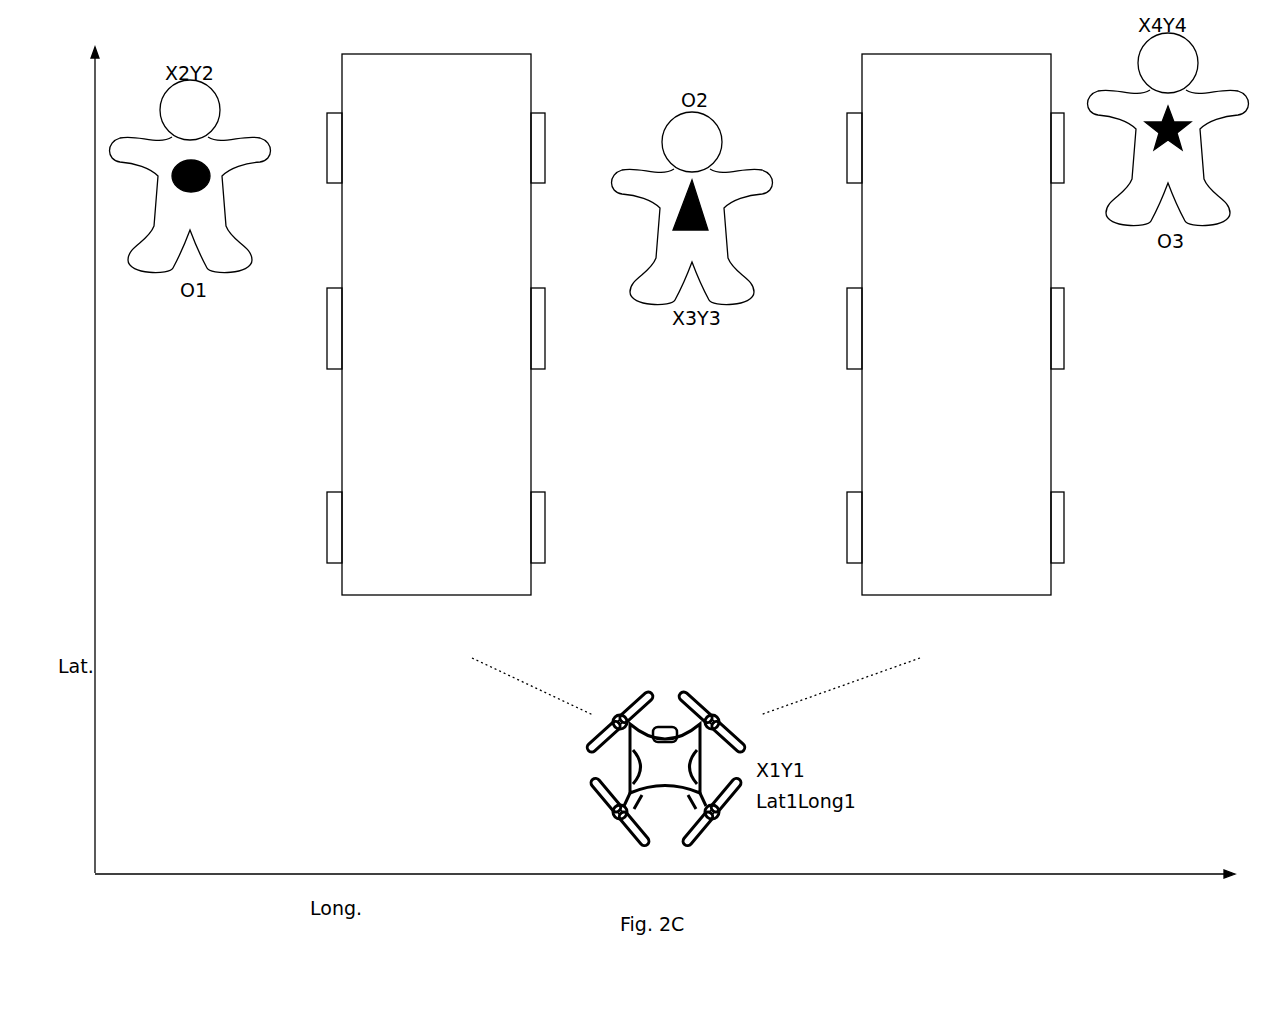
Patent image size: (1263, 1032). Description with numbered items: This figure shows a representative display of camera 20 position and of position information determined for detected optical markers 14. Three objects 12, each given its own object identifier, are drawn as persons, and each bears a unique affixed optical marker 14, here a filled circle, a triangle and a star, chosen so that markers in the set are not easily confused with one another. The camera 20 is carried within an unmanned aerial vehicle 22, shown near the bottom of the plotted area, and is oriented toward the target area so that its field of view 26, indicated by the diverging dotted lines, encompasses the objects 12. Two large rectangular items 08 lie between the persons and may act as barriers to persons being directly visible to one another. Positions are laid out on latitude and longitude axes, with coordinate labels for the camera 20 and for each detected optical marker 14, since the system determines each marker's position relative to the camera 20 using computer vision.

The vehicle 08 is at (531, 466).
The object 12 is at (165, 100).
The optical marker 14 is at (207, 183).
The camera 20 is at (675, 730).
The unmanned aerial vehicle 22 is at (632, 773).
The field of view 26 is at (550, 693).